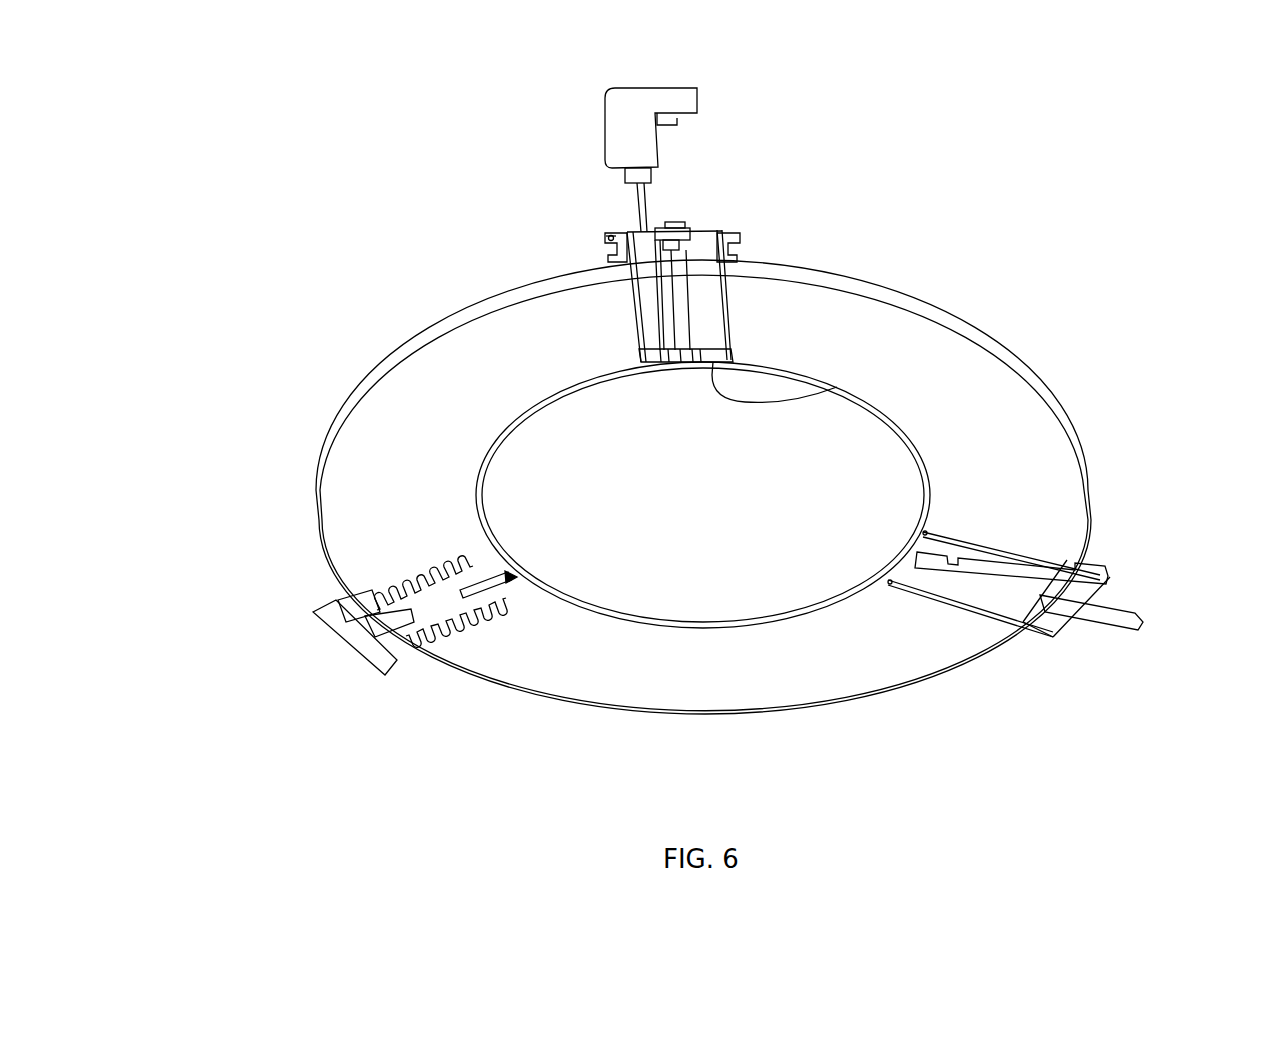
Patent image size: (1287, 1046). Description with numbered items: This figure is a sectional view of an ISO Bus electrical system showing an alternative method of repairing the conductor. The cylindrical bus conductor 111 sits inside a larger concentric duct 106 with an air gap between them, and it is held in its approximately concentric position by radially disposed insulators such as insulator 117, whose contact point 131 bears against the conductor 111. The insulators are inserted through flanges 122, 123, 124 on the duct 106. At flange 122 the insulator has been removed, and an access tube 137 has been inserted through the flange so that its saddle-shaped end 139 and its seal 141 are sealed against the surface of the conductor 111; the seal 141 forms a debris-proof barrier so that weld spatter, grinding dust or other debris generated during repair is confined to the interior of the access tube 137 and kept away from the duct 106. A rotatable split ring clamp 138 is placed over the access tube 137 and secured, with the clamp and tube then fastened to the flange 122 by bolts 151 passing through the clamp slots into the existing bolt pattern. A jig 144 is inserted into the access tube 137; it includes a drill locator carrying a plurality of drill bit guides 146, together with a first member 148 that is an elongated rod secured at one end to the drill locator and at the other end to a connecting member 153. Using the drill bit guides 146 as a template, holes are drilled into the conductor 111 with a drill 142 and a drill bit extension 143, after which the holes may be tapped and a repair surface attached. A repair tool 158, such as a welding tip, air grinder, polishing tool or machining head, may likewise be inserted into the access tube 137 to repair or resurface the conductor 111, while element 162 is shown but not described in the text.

The duct 106 is at (430, 327).
The bus conductor 111 is at (493, 448).
The insulator 117 is at (453, 617).
The flange 122 is at (610, 230).
The flange 123 is at (332, 600).
The flange 124 is at (1097, 567).
The contact point 131 is at (505, 572).
The access tube 137 is at (627, 312).
The split ring clamp 138 is at (740, 234).
The end of access tube 139 is at (732, 352).
The seal 141 is at (837, 387).
The drill 142 is at (697, 101).
The drill bit extension 143 is at (640, 197).
The jig 144 is at (730, 311).
The drill bit guides 146 is at (640, 343).
The first member 148 is at (728, 292).
The bolts 151 is at (605, 258).
The connecting member 153 is at (690, 228).
The repair tool 158 is at (1108, 618).
The flange bar 162 is at (950, 560).